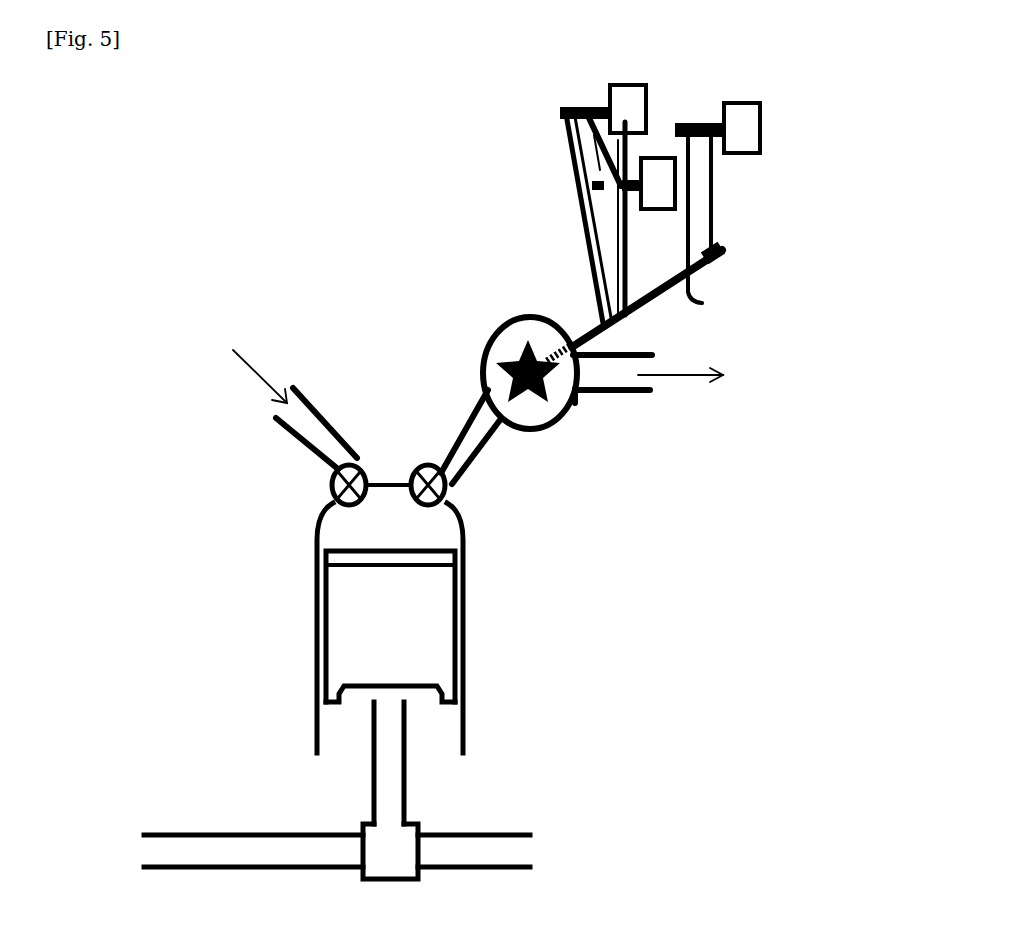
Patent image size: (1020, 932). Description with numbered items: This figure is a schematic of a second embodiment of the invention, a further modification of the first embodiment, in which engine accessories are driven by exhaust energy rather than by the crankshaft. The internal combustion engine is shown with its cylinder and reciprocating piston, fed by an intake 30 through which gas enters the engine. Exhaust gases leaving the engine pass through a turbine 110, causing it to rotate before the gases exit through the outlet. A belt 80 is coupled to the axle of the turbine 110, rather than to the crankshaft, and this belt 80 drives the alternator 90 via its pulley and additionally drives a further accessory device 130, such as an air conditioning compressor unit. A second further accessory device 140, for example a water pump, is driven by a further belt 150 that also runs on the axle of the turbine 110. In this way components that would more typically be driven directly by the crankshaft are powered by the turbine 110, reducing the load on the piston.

The intake 30 is at (290, 438).
The belt 80 is at (597, 240).
The alternator 90 is at (650, 193).
The turbine 110 is at (503, 348).
The further accessory device 130 is at (611, 94).
The further accessory device 140 is at (733, 128).
The further belt 150 is at (693, 203).